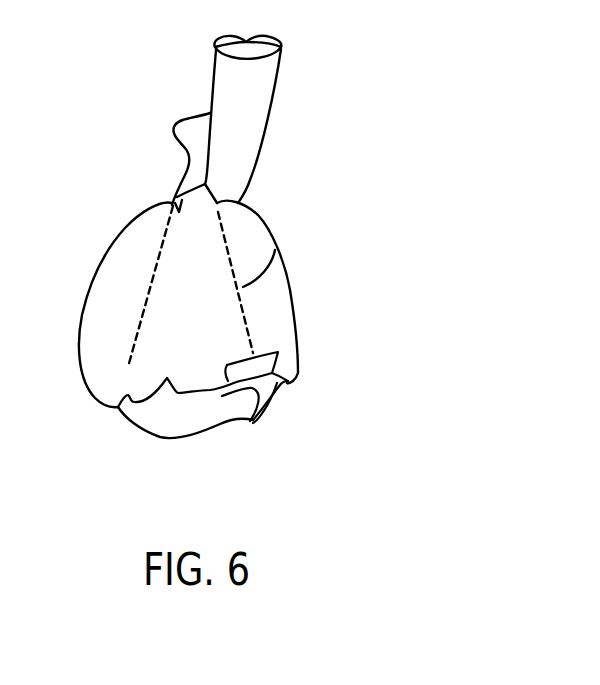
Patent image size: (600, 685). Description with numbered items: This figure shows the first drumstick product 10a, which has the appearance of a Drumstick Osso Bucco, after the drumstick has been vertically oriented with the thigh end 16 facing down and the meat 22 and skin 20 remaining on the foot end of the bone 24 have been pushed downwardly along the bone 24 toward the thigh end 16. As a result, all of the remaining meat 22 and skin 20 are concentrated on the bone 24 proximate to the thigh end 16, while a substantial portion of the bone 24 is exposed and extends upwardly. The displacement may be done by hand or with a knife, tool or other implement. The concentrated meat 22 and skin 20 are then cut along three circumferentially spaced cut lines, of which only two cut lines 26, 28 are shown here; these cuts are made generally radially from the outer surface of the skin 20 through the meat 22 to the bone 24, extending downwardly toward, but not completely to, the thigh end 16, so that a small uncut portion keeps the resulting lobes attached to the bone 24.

The drumstick product 10a is at (357, 225).
The thigh end 16 is at (237, 418).
The skin 20 is at (100, 300).
The meat 22 is at (157, 427).
The bone 24 is at (240, 120).
The cut line 26 is at (228, 238).
The cut line 28 is at (163, 232).